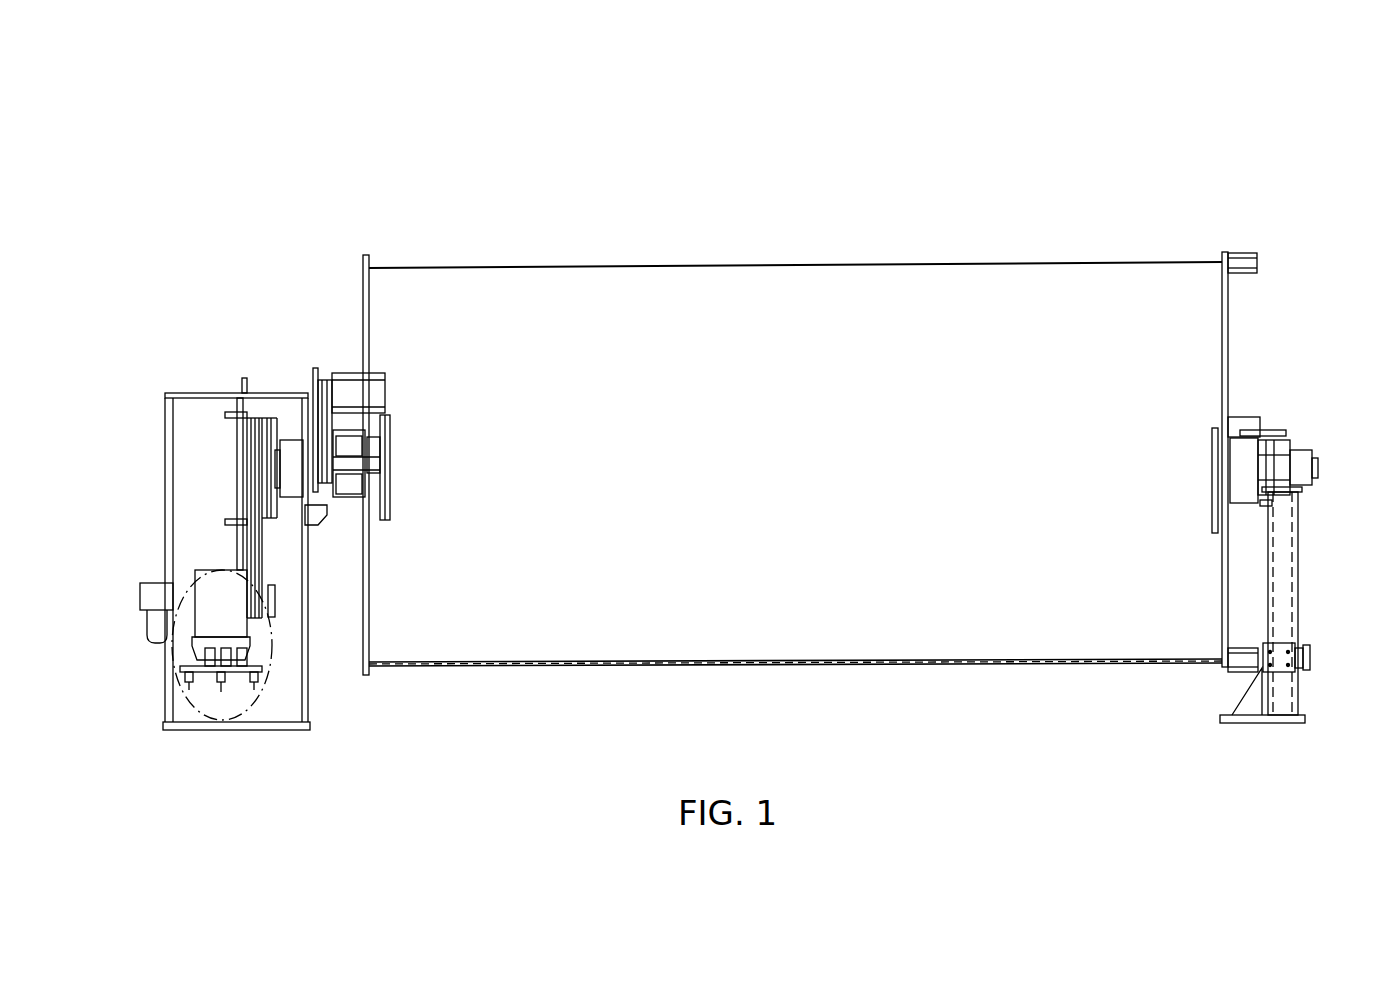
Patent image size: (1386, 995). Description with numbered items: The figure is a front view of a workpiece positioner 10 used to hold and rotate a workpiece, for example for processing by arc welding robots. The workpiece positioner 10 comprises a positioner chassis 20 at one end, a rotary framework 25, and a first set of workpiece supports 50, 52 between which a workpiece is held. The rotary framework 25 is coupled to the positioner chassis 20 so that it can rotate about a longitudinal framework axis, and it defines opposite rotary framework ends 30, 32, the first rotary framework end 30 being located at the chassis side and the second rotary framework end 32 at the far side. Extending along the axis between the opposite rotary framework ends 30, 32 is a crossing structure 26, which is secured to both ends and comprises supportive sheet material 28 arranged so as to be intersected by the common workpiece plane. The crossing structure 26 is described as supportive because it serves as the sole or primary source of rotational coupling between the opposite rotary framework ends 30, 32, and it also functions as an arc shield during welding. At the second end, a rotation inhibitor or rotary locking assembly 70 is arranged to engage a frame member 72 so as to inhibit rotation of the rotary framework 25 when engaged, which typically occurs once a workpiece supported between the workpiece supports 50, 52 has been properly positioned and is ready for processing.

The workpiece positioner 10 is at (763, 376).
The positioner chassis 20 is at (308, 693).
The rotary framework 25 is at (1228, 338).
The crossing structure 26 is at (795, 397).
The supportive sheet material 28 is at (785, 389).
The rotary framework end 30 is at (304, 438).
The rotary framework end 32 is at (1264, 443).
The workpiece support 50 is at (390, 505).
The workpiece support 52 is at (1210, 442).
The rotary locking assembly 70 is at (1308, 665).
The frame member 72 is at (1243, 252).